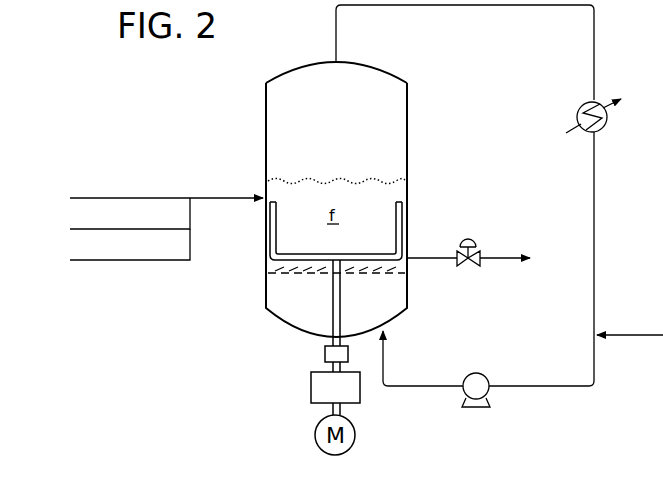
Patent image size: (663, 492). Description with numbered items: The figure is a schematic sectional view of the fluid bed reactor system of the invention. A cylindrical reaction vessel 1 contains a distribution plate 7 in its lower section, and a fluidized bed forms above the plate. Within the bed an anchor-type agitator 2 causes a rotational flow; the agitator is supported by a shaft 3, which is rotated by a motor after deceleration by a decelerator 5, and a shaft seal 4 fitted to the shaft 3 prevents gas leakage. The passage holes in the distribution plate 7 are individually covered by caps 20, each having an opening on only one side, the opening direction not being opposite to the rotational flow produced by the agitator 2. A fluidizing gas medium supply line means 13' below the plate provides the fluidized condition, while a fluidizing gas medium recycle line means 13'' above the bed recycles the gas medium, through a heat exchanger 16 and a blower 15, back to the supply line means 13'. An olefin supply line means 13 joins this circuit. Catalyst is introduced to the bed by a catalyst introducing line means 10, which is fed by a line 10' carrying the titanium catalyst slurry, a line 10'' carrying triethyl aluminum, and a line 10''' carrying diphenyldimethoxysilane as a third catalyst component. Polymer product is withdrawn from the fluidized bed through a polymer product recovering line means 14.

The cylindrical reaction vessel 1 is at (266, 112).
The agitator 2 is at (400, 213).
The shaft 3 is at (340, 303).
The shaft seal 4 is at (325, 352).
The decelerator 5 is at (311, 390).
The distribution plate 7 is at (292, 276).
The catalyst introducing line means 10 is at (226, 173).
The line 10' is at (128, 180).
The line 10'' is at (110, 213).
The line 10''' is at (128, 269).
The olefin supply line means 13 is at (630, 318).
The fluidizing gas medium supply line means 13' is at (488, 358).
The fluidizing gas medium recycle line means 13'' is at (441, 52).
The polymer product recovering line means 14 is at (433, 258).
The blower 15 is at (489, 375).
The heat exchanger 16 is at (601, 133).
The cap 20 is at (268, 266).